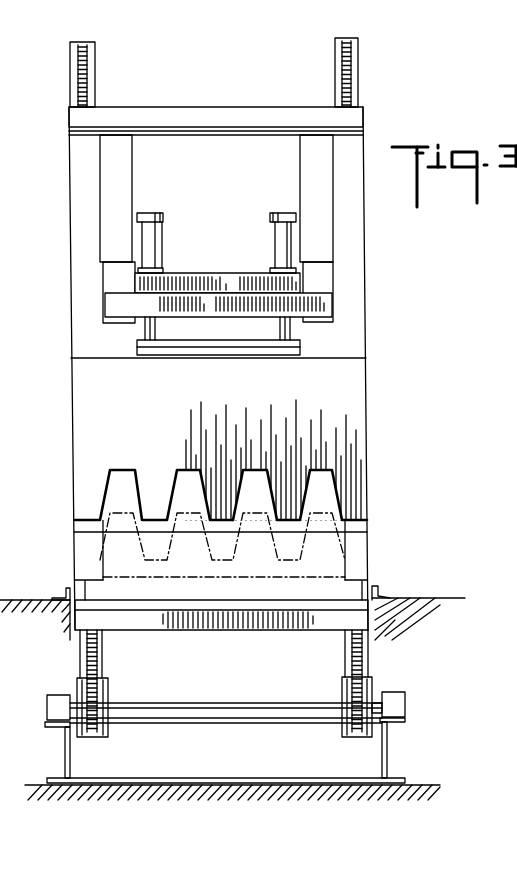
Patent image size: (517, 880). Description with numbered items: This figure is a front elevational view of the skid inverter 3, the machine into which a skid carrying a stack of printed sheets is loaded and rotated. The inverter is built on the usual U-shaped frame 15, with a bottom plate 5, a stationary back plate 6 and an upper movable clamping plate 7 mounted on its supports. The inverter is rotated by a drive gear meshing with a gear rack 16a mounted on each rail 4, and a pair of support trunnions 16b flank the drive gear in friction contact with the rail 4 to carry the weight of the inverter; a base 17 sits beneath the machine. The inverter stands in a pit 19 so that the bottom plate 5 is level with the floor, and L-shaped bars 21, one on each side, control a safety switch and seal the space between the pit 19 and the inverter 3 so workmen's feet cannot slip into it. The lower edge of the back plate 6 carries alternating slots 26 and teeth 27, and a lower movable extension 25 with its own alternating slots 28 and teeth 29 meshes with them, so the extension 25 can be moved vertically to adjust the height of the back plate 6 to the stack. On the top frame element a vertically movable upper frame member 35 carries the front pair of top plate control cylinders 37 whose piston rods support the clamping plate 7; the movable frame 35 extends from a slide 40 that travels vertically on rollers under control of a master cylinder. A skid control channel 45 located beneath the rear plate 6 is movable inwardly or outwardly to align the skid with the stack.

The skid inverter 3 is at (50, 237).
The rails 4 is at (93, 83).
The bottom plate 5 is at (338, 598).
The back plate 6 is at (357, 404).
The upper movable clamping plate 7 is at (293, 352).
The U-shaped frame 15 is at (237, 92).
The gear rack 16a is at (78, 83).
The support trunnions 16b is at (103, 738).
The base frame 17 is at (388, 745).
The pit 19 is at (387, 627).
The bars 21 is at (66, 599).
The lower movable extension 25 is at (115, 558).
The slots 26 is at (185, 478).
The teeth 27 is at (283, 478).
The slots 28 is at (292, 555).
The teeth 29 is at (185, 552).
The upper frame member 35 is at (318, 303).
The front pair of top plate control cylinders 37 is at (152, 238).
The slide 40 is at (110, 284).
The skid control channel 45 is at (298, 596).